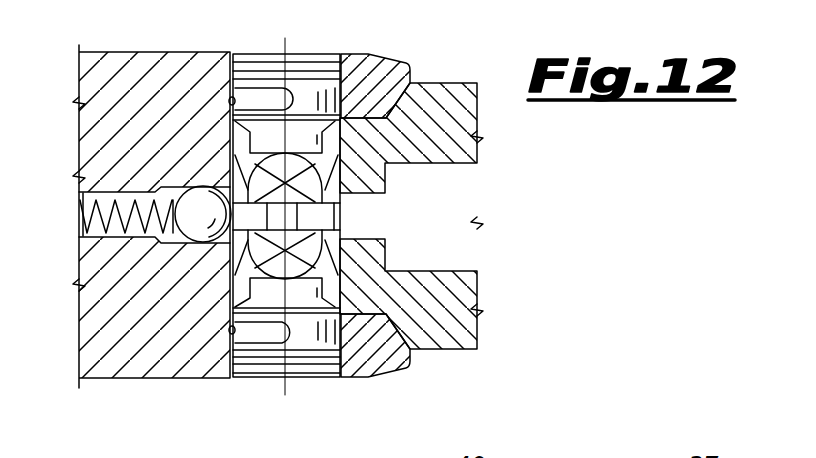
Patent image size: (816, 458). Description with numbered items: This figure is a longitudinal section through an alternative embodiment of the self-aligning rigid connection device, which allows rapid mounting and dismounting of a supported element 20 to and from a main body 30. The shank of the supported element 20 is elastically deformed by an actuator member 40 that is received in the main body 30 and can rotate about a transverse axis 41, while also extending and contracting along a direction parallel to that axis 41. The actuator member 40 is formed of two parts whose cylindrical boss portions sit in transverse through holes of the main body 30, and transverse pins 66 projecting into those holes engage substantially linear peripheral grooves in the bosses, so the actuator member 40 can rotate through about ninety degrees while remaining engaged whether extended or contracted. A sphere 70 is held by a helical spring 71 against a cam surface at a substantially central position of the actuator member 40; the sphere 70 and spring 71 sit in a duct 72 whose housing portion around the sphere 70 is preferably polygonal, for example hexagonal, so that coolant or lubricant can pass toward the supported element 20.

The supported element 20 is at (470, 143).
The main body 30 is at (100, 328).
The actuator member 40 is at (313, 340).
The axis 41 is at (285, 40).
The transverse pins 66 is at (231, 98).
The sphere 70 is at (192, 198).
The helical spring 71 is at (82, 217).
The duct 72 is at (86, 199).